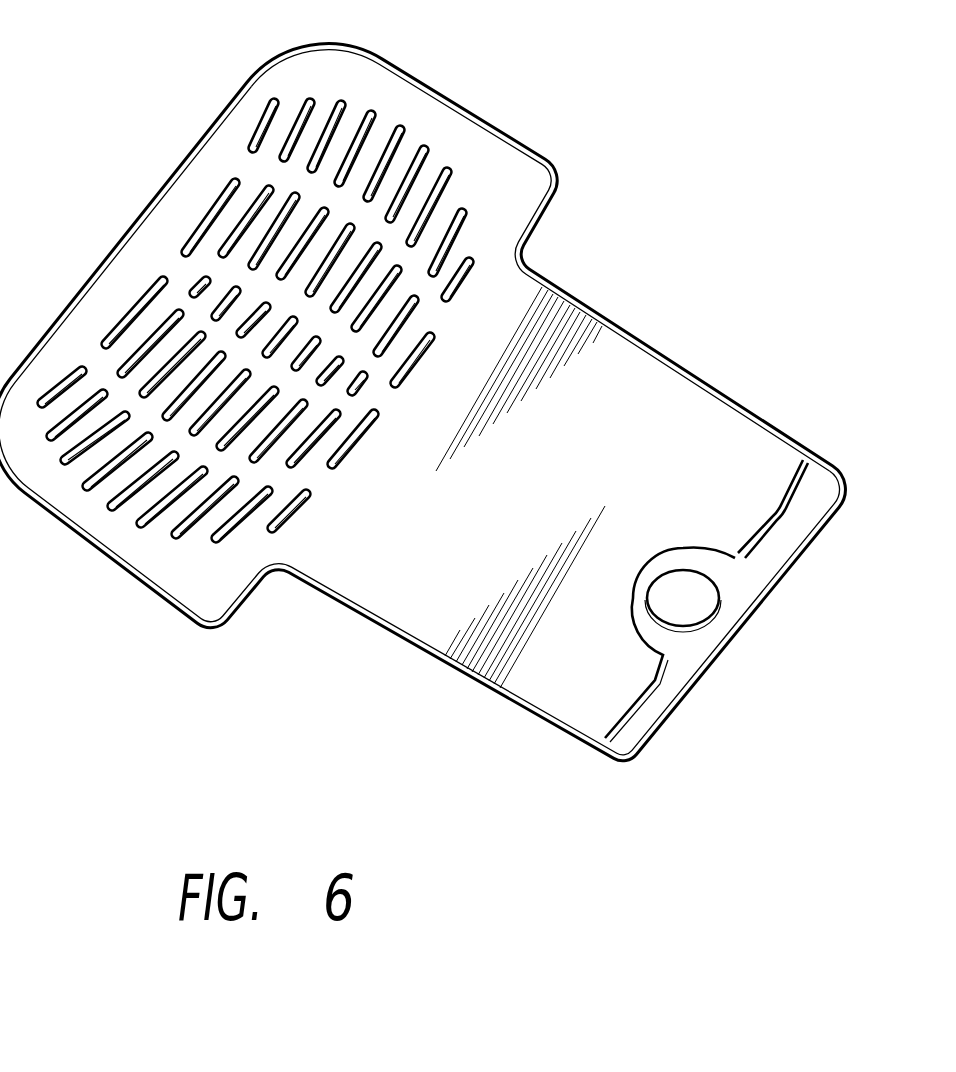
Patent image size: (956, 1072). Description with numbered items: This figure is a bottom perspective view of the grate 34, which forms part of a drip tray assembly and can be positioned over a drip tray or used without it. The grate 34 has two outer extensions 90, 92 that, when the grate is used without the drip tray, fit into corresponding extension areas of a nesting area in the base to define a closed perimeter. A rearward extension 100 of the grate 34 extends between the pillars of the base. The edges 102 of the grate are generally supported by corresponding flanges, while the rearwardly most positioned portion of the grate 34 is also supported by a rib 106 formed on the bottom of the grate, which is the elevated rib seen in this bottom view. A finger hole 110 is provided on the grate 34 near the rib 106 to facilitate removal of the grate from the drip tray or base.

The grate 34 is at (112, 120).
The outer extension 90 is at (127, 577).
The outer extension 92 is at (472, 117).
The rearward extension 100 is at (640, 440).
The edge 102 is at (447, 660).
The rib 106 is at (587, 737).
The finger hole 110 is at (697, 595).